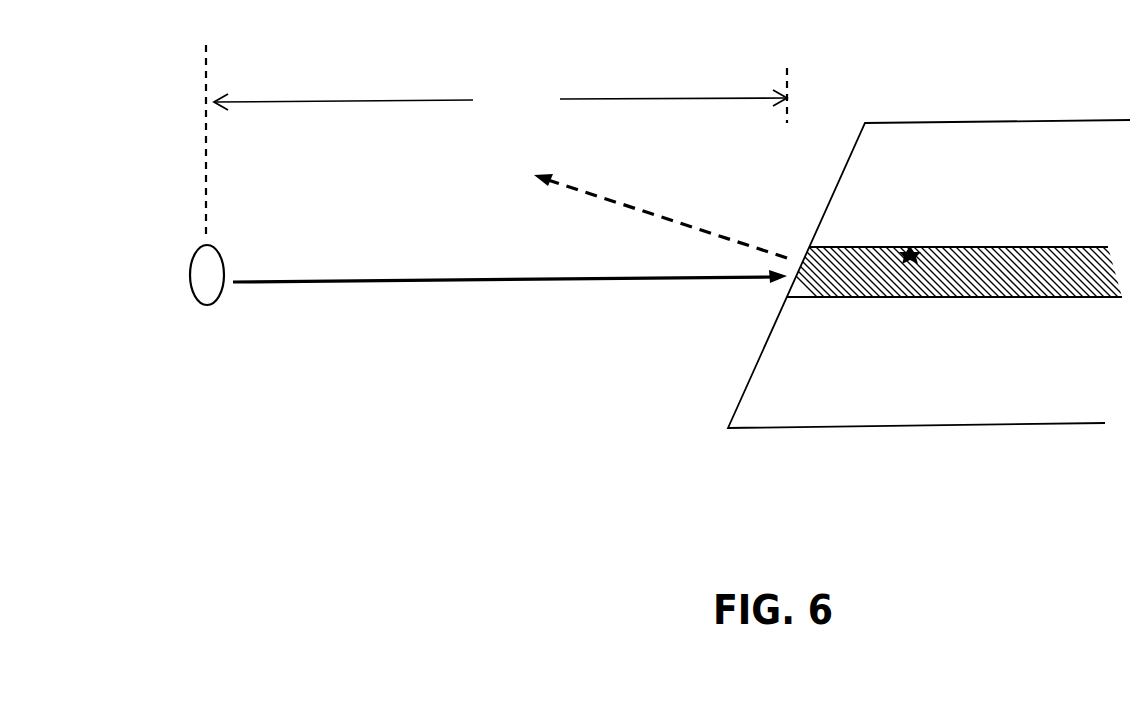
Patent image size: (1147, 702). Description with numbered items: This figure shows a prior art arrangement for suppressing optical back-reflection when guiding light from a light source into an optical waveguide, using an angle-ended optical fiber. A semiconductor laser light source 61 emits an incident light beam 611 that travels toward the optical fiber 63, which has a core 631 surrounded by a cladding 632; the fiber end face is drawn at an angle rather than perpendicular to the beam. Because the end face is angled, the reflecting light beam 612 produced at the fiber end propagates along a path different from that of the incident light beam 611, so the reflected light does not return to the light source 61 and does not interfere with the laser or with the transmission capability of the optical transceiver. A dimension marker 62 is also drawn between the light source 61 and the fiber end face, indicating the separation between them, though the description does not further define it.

The light source 61 is at (176, 275).
The incident light beam 611 is at (510, 301).
The reflecting light beam 612 is at (660, 215).
The distance 62 is at (496, 142).
The optical fiber 63 is at (929, 299).
The core 631 is at (940, 247).
The cladding 632 is at (907, 177).